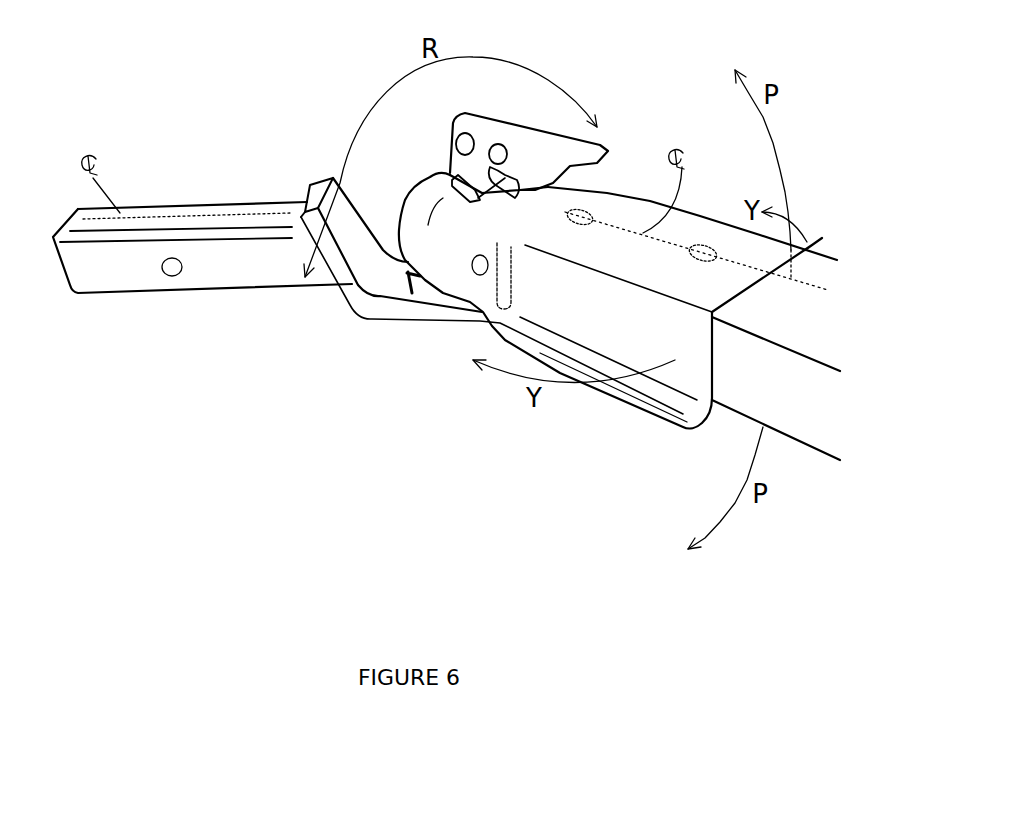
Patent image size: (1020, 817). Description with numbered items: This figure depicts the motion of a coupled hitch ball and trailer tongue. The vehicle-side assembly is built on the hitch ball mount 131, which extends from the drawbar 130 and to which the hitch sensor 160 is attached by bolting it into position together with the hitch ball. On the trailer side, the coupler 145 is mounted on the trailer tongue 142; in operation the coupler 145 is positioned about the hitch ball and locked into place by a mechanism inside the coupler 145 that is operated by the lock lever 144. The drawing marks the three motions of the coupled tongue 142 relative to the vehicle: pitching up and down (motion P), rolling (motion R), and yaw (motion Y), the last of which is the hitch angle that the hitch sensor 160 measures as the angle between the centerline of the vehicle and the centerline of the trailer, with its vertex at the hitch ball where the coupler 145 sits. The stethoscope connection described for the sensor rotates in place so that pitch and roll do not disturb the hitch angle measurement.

The hitch bar 130 is at (228, 277).
The hitch ball mount 131 is at (362, 294).
The trailer tongue 142 is at (692, 440).
The lock lever 144 is at (607, 140).
The coupler 145 is at (623, 200).
The hitch sensor 160 is at (422, 287).